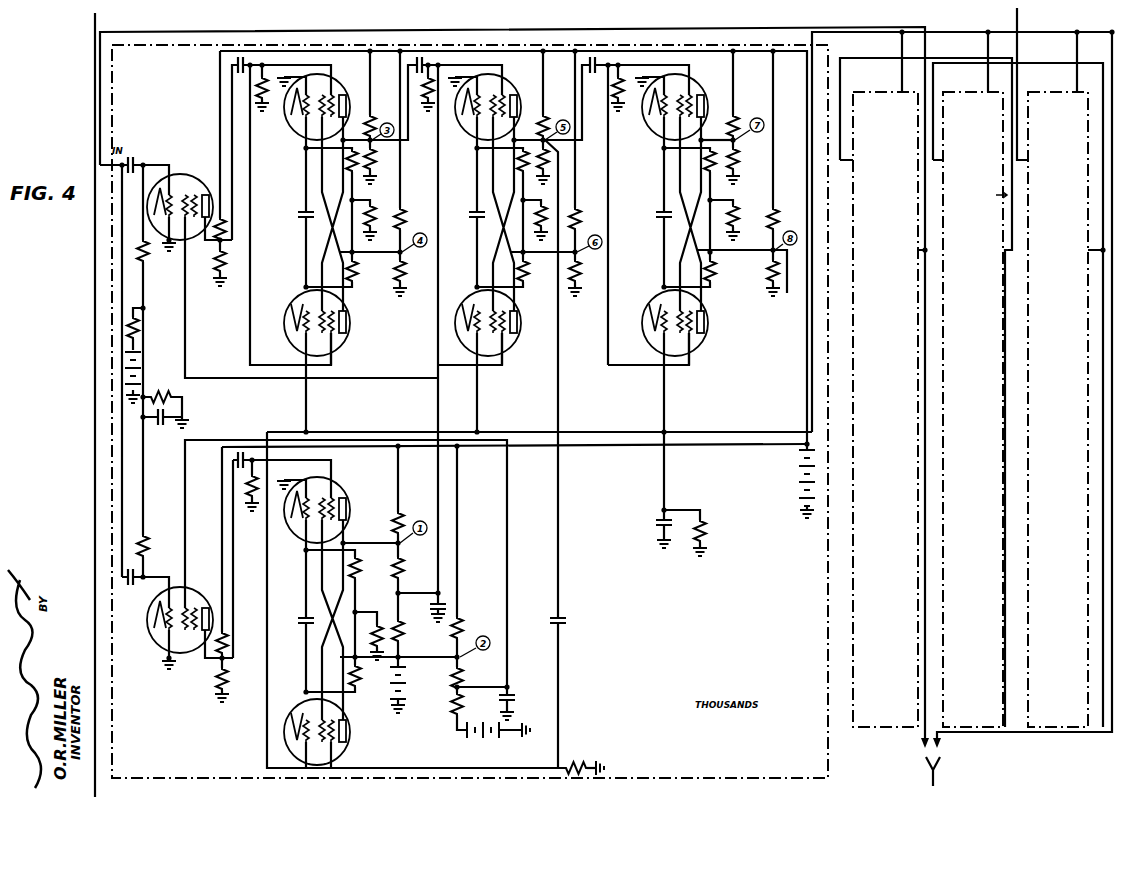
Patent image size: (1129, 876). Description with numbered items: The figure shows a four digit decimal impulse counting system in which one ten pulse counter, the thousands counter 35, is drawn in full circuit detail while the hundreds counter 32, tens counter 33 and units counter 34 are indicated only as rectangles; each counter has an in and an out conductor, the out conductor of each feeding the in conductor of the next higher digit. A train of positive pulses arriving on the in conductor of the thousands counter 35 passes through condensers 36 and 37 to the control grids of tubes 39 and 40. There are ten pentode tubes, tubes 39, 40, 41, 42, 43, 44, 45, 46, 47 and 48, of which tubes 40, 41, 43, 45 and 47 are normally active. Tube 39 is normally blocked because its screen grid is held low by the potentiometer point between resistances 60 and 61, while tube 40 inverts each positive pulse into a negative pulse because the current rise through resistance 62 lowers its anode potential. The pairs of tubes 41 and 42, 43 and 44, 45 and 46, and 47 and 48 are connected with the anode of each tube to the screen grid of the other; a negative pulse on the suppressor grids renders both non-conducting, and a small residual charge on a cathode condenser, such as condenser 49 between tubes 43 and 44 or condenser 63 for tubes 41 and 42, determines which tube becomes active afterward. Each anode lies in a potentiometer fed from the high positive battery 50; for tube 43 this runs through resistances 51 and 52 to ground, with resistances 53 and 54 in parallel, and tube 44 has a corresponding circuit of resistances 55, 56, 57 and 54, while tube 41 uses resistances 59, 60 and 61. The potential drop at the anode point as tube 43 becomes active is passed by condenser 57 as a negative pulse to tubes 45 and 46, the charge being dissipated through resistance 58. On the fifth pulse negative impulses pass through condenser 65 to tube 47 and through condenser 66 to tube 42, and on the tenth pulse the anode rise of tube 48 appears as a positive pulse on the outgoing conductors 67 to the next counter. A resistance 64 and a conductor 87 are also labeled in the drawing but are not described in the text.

The hundreds counter 32 is at (880, 90).
The tens counter 33 is at (970, 90).
The units counter 34 is at (1058, 90).
The thousands counter 35 is at (832, 54).
The condenser 36 is at (134, 160).
The condenser 37 is at (146, 560).
The tube 39 is at (184, 176).
The tube 40 is at (185, 594).
The tube 41 is at (341, 488).
The tube 42 is at (350, 748).
The tube 43 is at (340, 84).
The tube 44 is at (341, 341).
The tube 45 is at (511, 84).
The tube 46 is at (512, 341).
The tube 47 is at (698, 84).
The tube 48 is at (699, 341).
The condenser 49 is at (300, 213).
The high positive battery 50 is at (800, 472).
The resistance 51 is at (372, 118).
The resistance 52 is at (374, 160).
The resistance 53 is at (350, 158).
The resistance 54 is at (372, 212).
The resistance 55 is at (403, 213).
The resistance 56 is at (404, 270).
The resistance 57 is at (356, 270).
The resistance 58 is at (440, 63).
The resistance 59 is at (401, 515).
The resistance 60 is at (403, 568).
The resistance 61 is at (401, 634).
The resistance 62 is at (226, 640).
The condenser 63 is at (303, 618).
The plate load resistor 64 is at (224, 231).
The condenser 65 is at (593, 60).
The condenser 66 is at (567, 620).
The outgoing conductors 67 is at (790, 251).
The reset conductor 87 is at (1043, 32).